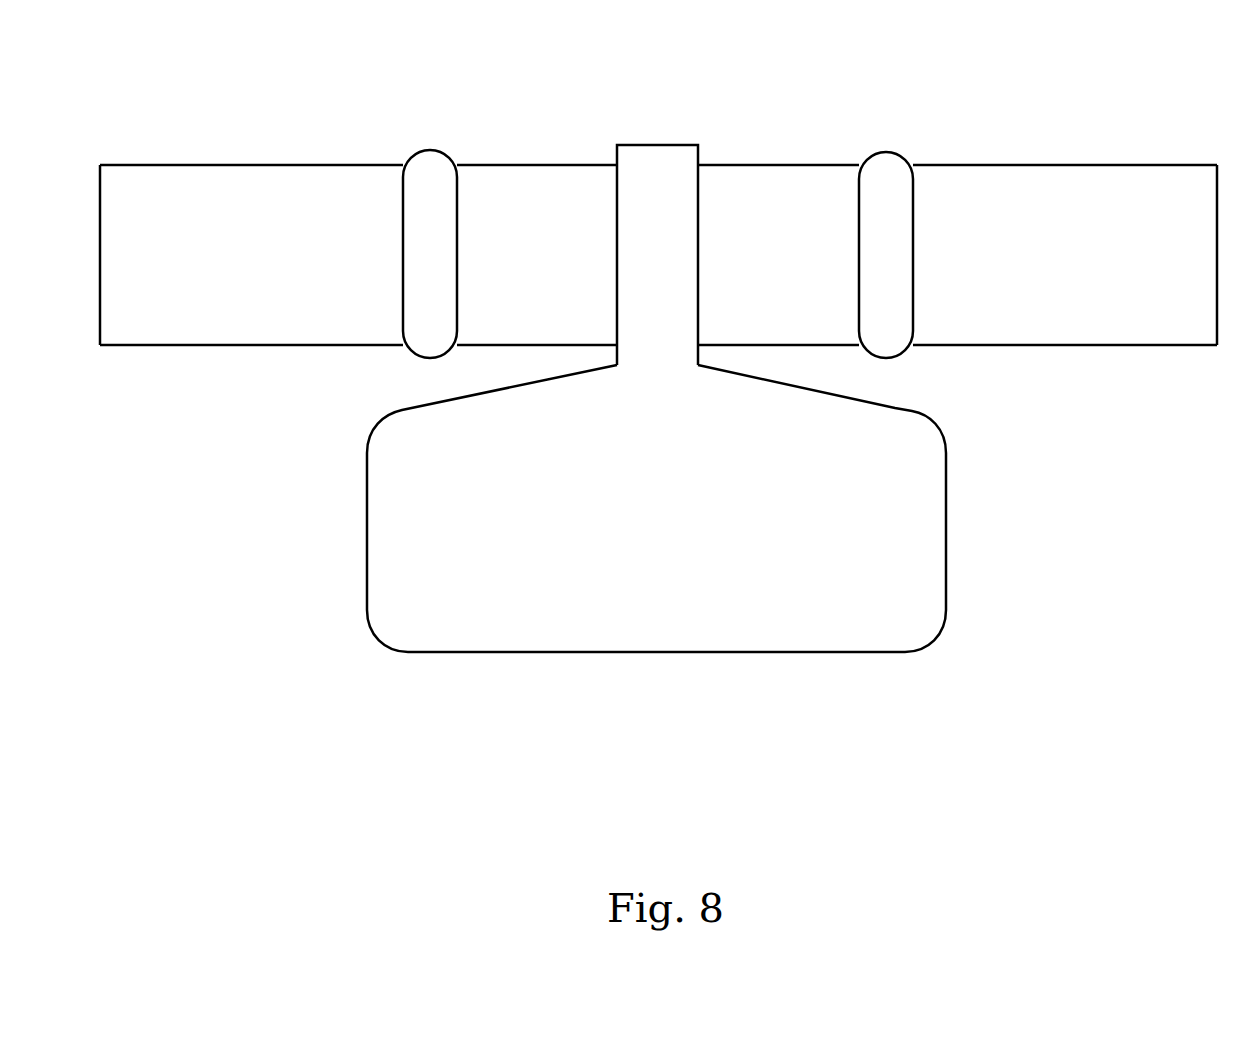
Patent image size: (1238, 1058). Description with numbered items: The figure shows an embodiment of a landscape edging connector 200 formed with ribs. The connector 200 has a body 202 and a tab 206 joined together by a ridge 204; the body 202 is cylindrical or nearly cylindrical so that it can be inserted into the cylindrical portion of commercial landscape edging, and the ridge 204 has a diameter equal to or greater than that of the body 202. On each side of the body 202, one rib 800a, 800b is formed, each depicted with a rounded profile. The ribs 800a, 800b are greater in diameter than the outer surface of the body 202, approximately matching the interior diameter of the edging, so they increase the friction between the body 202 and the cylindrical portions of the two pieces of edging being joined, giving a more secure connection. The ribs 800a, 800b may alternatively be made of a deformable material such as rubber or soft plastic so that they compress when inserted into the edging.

The landscape edging connector 200 is at (352, 107).
The body 202 is at (978, 259).
The ridge 204 is at (677, 157).
The tab 206 is at (679, 521).
The rib 800a is at (424, 173).
The rib 800b is at (885, 173).